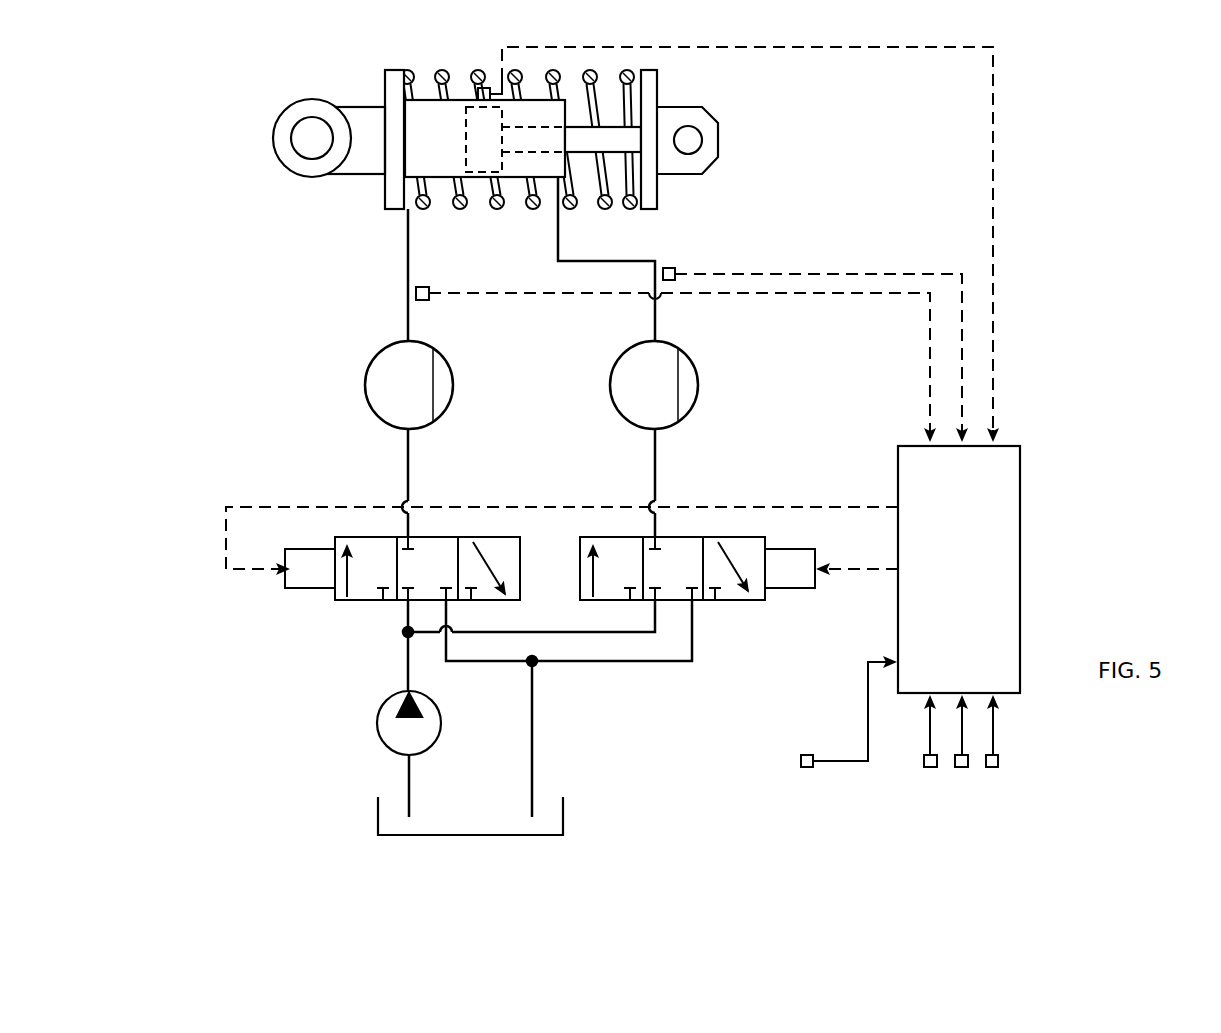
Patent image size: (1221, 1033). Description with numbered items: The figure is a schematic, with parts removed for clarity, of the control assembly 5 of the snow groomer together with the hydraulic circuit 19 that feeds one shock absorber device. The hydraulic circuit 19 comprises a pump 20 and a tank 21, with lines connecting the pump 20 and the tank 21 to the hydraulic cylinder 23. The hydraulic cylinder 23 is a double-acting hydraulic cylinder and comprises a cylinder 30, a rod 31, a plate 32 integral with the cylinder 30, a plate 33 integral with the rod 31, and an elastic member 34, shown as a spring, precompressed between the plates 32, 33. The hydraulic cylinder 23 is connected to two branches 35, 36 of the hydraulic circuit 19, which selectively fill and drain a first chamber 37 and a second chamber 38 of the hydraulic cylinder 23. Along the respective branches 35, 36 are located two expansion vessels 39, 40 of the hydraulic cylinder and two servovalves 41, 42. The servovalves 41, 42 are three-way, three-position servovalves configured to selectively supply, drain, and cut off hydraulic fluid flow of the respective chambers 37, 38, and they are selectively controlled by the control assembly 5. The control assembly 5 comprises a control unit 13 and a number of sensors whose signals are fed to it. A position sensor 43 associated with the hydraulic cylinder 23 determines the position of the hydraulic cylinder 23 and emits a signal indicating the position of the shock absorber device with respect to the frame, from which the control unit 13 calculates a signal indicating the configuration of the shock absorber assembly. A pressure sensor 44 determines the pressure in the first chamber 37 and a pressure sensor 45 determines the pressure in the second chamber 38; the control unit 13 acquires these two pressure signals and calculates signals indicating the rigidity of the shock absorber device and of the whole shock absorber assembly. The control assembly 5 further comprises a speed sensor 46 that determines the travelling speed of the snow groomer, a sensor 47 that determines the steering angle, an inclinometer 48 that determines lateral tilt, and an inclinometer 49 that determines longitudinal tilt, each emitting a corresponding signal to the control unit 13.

The control assembly 5 is at (1047, 428).
The control unit 13 is at (993, 534).
The hydraulic circuit 19 is at (258, 372).
The pump 20 is at (370, 737).
The tank 21 is at (370, 808).
The hydraulic cylinder 23 is at (473, 186).
The cylinder 30 is at (447, 153).
The rod 31 is at (627, 138).
The plate 32 is at (393, 178).
The plate 33 is at (647, 192).
The elastic member 34 is at (498, 203).
The branch 35 is at (407, 250).
The branch 36 is at (562, 220).
The first chamber 37 is at (432, 126).
The second chamber 38 is at (540, 165).
The expansion vessel 39 is at (394, 402).
The expansion vessel 40 is at (650, 398).
The servovalve 41 is at (375, 619).
The servovalve 42 is at (716, 616).
The position sensor 43 is at (482, 88).
The pressure sensor 44 is at (430, 288).
The pressure sensor 45 is at (676, 266).
The speed sensor 46 is at (962, 768).
The sensor 47 is at (998, 762).
The inclinometer 48 is at (807, 768).
The inclinometer 49 is at (930, 768).